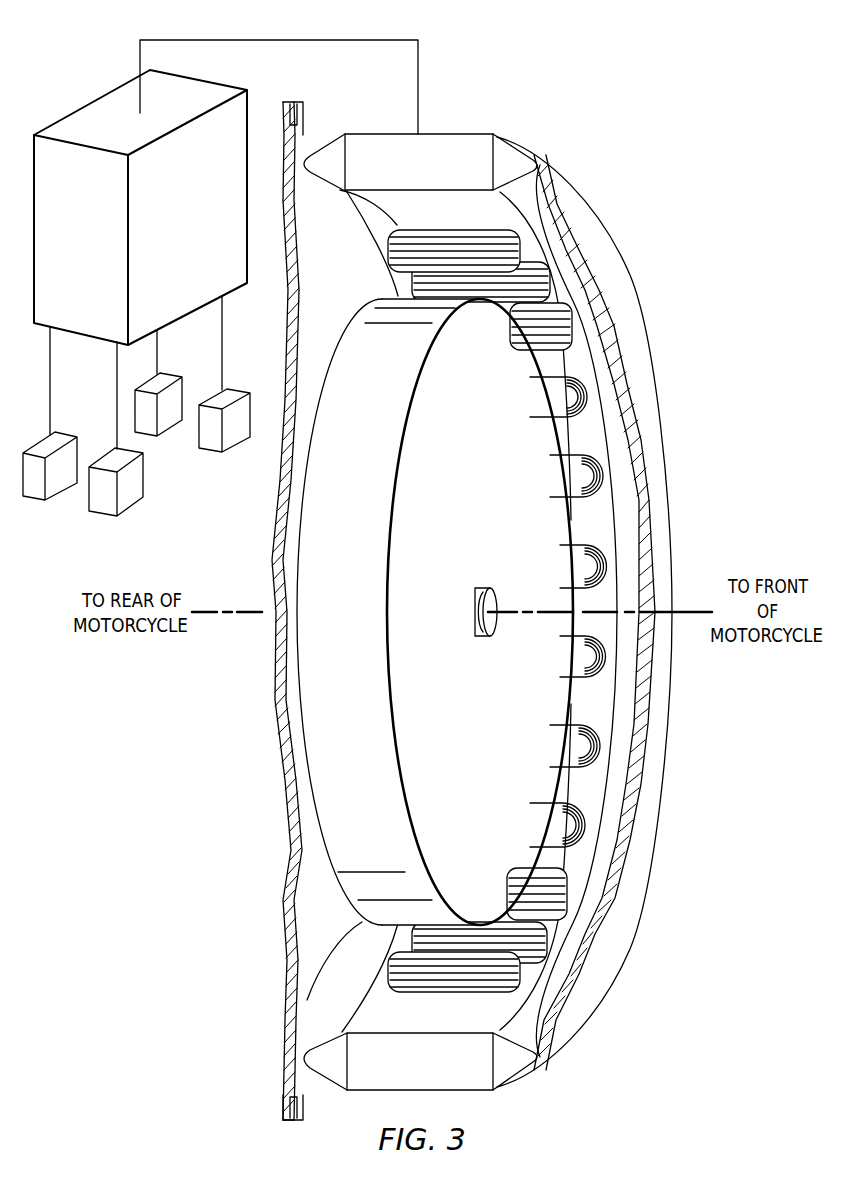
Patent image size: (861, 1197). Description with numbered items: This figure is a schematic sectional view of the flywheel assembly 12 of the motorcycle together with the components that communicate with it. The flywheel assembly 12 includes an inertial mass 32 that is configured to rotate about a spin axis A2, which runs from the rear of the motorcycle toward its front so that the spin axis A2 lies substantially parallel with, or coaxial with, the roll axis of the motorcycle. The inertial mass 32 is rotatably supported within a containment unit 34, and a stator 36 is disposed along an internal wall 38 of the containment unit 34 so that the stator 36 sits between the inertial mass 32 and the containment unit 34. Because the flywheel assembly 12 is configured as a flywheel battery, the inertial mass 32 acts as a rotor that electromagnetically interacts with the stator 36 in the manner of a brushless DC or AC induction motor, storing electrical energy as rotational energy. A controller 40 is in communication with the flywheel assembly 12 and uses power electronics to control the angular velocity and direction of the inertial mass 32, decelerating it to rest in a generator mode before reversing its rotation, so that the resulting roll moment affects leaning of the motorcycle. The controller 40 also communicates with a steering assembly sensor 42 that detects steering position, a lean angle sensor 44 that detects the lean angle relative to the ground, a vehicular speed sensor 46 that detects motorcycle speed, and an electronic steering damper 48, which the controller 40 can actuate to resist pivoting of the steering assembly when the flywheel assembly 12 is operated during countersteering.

The flywheel assembly 12 is at (634, 77).
The inertial mass 32 is at (500, 477).
The containment unit 34 is at (480, 127).
The stator 36 is at (555, 868).
The internal wall 38 is at (455, 204).
The controller 40 is at (195, 231).
The steering assembly sensor 42 is at (58, 499).
The lean angle sensor 44 is at (236, 453).
The vehicular speed sensor 46 is at (127, 513).
The electronic steering damper 48 is at (168, 434).
The spin axis A2 is at (688, 611).